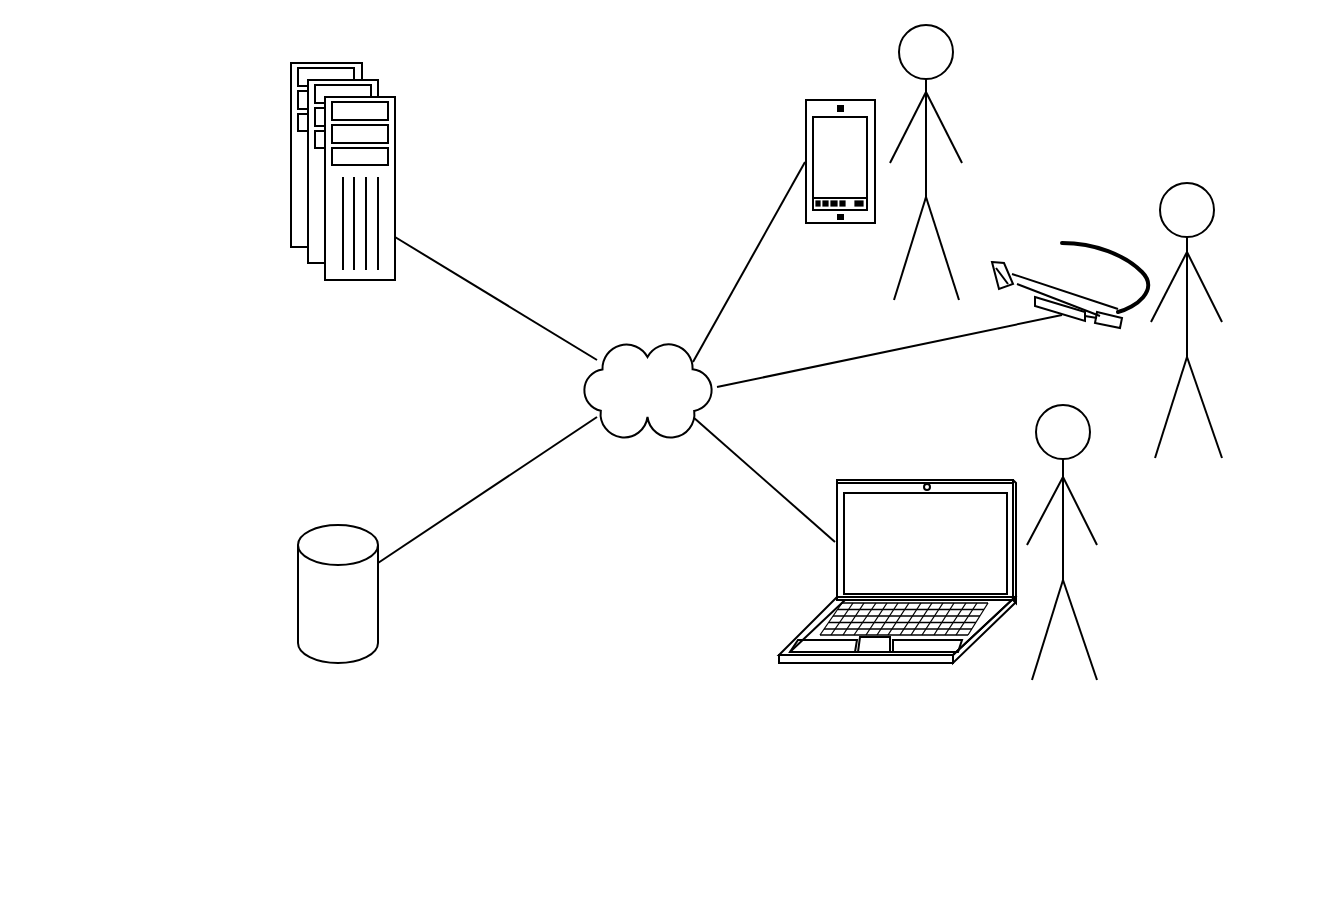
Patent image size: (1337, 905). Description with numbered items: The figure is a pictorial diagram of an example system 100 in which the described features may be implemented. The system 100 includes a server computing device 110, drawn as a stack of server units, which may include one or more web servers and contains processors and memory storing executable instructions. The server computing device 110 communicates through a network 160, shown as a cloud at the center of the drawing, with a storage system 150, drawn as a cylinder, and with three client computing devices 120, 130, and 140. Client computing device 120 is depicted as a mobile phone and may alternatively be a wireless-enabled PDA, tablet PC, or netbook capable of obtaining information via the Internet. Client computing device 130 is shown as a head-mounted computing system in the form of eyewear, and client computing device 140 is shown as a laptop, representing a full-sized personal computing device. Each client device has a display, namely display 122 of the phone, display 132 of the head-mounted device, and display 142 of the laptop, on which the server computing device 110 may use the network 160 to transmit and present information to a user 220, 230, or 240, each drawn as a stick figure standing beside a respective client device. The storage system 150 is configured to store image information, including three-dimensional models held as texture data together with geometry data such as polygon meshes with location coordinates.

The system 100 is at (173, 741).
The computing device 110 is at (395, 137).
The client computing device 120 is at (786, 161).
The display 122 is at (810, 158).
The client computing device 130 is at (1070, 280).
The display 132 is at (1115, 327).
The client computing device 140 is at (873, 571).
The display 142 is at (844, 585).
The storage system 150 is at (378, 613).
The network 160 is at (647, 390).
The user 220 is at (955, 152).
The user 230 is at (1217, 310).
The user 240 is at (1093, 532).